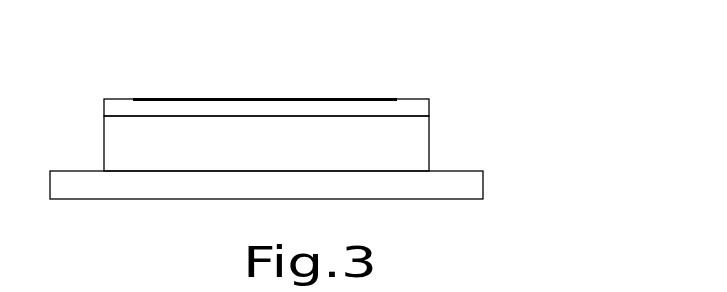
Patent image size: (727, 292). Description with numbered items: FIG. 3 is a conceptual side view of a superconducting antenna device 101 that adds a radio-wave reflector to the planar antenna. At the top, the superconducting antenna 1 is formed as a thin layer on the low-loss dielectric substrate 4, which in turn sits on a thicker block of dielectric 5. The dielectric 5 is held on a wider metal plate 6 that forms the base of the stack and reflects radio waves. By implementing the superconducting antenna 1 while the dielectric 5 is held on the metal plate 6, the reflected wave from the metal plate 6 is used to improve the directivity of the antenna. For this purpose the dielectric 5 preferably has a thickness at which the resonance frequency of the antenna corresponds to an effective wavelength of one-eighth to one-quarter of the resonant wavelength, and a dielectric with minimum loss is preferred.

The superconducting antenna device 101 is at (90, 38).
The superconducting antenna 1 is at (310, 93).
The low-loss dielectric substrate 4 is at (430, 108).
The dielectric 5 is at (430, 157).
The metal plate 6 is at (484, 183).